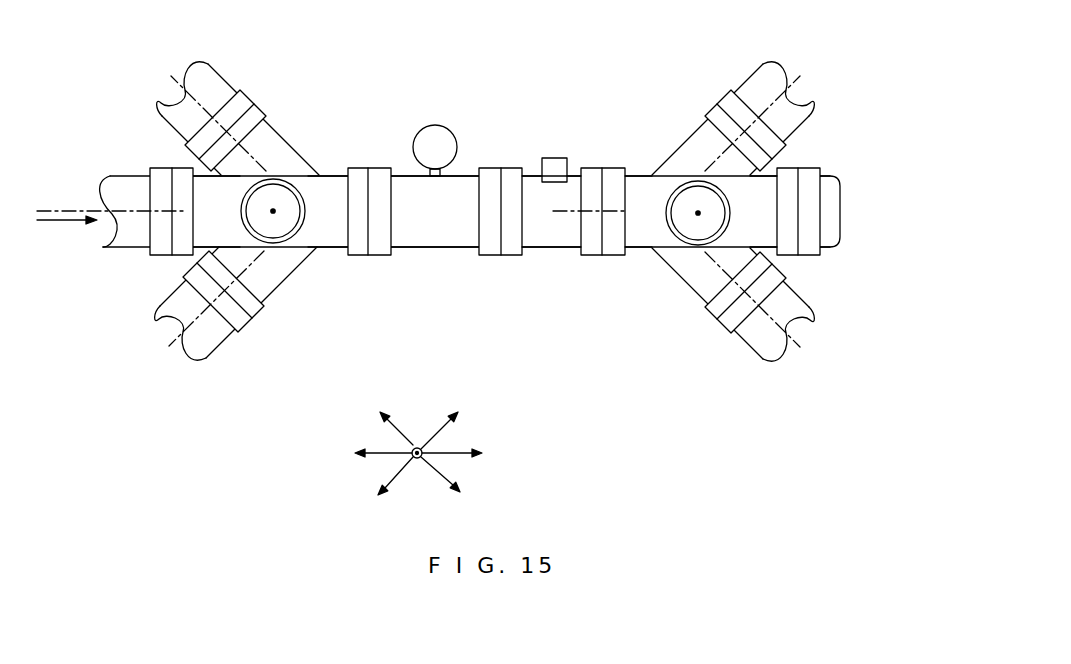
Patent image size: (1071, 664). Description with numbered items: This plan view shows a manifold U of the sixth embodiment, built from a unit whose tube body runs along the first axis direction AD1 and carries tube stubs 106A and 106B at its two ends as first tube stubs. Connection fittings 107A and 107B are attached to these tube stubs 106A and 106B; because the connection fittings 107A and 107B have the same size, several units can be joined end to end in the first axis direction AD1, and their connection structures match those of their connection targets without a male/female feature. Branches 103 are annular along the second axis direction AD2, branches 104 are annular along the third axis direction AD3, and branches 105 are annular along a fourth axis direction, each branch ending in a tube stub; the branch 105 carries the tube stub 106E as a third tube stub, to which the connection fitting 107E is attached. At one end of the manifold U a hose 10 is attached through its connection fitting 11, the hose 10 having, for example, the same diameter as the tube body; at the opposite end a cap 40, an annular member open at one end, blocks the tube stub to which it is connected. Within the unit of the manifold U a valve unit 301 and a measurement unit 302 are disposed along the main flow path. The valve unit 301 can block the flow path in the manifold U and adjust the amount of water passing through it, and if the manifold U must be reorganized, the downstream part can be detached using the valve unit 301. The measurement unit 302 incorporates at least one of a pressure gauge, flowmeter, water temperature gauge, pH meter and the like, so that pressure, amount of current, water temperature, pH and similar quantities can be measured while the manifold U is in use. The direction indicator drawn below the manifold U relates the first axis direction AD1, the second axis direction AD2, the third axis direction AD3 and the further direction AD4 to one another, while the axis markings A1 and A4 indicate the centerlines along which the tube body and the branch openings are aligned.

The hose 10 is at (123, 182).
The connection fitting 11 is at (157, 235).
The cap 40 is at (826, 198).
The branch 103 is at (278, 282).
The branch 104 is at (262, 132).
The branch 105 is at (300, 234).
The tube stub 106A is at (338, 178).
The tube stub 106B is at (205, 190).
The tube stub 106E is at (280, 178).
The connection fitting 107A is at (357, 178).
The connection fitting 107B is at (185, 247).
The connection fitting 107E is at (307, 211).
The valve unit 301 is at (570, 197).
The measurement unit 302 is at (462, 192).
The manifold U is at (525, 97).
The axis A1 is at (49, 208).
The axis A4 is at (272, 211).
The first axis direction AD1 is at (420, 454).
The second axis direction AD2 is at (443, 433).
The third axis direction AD3 is at (443, 477).
The direction AD4 is at (417, 447).